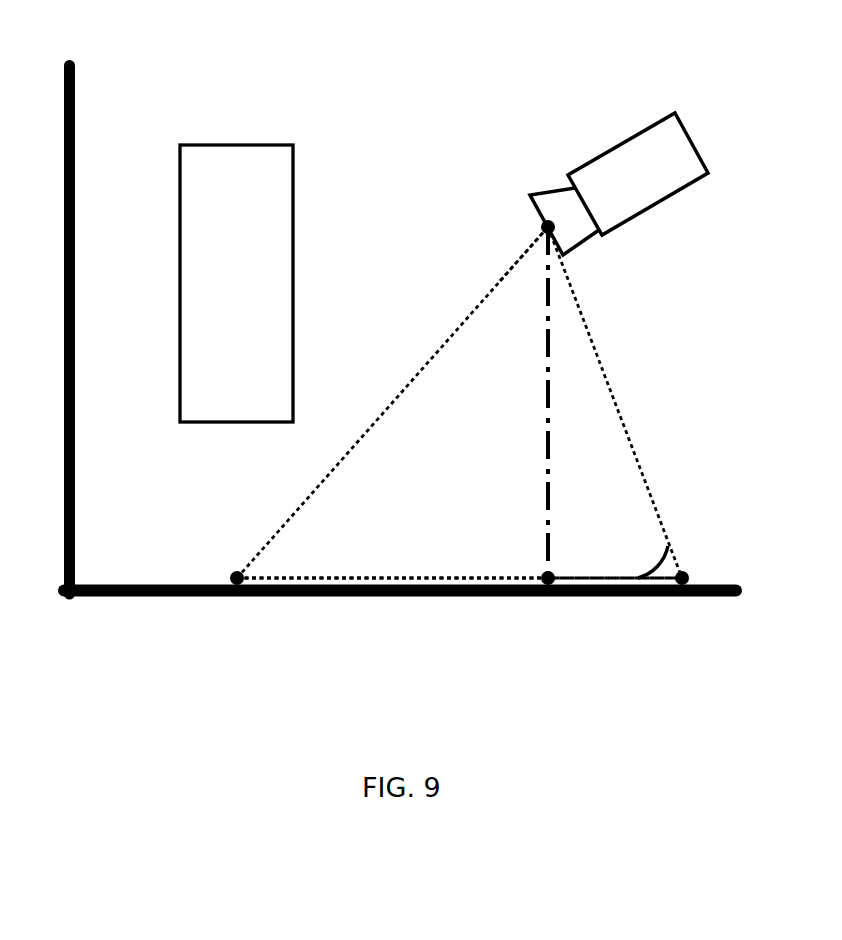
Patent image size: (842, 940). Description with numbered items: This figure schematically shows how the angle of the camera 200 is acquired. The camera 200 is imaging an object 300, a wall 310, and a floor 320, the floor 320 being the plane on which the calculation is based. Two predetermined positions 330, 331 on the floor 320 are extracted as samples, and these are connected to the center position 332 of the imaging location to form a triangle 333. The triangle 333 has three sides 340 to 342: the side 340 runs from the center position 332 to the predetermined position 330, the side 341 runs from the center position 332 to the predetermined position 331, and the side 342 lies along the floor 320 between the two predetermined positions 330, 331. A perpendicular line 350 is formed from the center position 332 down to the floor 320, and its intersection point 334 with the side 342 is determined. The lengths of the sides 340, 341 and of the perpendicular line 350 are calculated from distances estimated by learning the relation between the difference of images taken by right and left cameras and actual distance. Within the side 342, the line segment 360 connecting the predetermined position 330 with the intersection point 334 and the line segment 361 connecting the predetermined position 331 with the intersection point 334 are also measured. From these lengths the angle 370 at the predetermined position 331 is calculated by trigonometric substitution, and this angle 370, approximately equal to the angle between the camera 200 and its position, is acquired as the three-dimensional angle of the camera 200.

The camera 200 is at (672, 125).
The object 300 is at (273, 152).
The wall 310 is at (74, 56).
The floor 320 is at (707, 585).
The predetermined position 330 is at (232, 572).
The predetermined position 331 is at (687, 573).
The center position of the imaging location 332 is at (548, 218).
The triangle 333 is at (510, 277).
The intersection point 334 is at (543, 573).
The side 340 is at (458, 327).
The side 341 is at (597, 363).
The side 342 is at (360, 578).
The perpendicular line 350 is at (548, 430).
The line segment 360 is at (440, 578).
The line segment 361 is at (578, 578).
The angle 370 is at (653, 550).